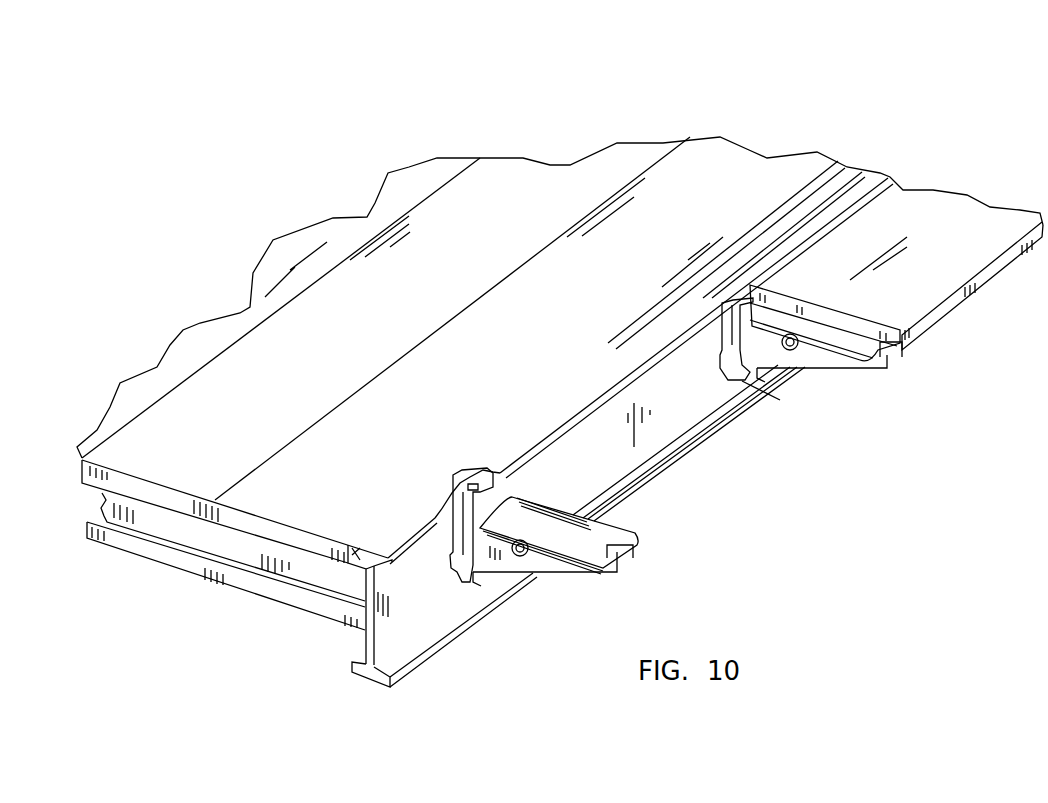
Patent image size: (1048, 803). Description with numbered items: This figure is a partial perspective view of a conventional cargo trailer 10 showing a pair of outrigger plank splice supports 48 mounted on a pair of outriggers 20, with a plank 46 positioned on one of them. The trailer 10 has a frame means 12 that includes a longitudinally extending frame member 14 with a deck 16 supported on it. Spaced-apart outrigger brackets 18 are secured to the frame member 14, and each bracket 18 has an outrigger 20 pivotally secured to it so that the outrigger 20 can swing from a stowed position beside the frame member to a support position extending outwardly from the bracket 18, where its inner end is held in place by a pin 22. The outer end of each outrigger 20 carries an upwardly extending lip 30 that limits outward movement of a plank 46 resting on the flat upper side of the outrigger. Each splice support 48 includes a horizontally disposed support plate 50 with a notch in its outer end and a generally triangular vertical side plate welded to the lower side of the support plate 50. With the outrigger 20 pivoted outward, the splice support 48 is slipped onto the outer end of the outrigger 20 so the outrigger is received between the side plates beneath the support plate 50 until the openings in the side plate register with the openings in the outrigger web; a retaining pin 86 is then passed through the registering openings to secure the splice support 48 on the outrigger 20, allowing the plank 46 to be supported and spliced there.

The cargo trailer 10 is at (787, 137).
The frame means 12 is at (297, 618).
The frame member 14 is at (417, 660).
The deck 16 is at (675, 177).
The outrigger bracket 18 is at (474, 577).
The outrigger 20 is at (644, 562).
The pin 22 is at (481, 583).
The lip 30 is at (638, 551).
The plank 46 is at (938, 200).
The outrigger plank splice support 48 is at (577, 503).
The support plate 50 is at (527, 506).
The retaining pin 86 is at (560, 574).